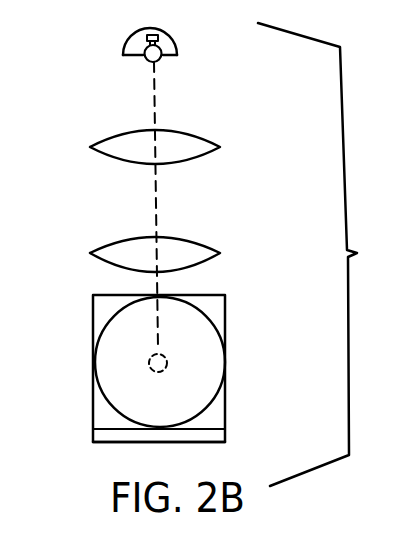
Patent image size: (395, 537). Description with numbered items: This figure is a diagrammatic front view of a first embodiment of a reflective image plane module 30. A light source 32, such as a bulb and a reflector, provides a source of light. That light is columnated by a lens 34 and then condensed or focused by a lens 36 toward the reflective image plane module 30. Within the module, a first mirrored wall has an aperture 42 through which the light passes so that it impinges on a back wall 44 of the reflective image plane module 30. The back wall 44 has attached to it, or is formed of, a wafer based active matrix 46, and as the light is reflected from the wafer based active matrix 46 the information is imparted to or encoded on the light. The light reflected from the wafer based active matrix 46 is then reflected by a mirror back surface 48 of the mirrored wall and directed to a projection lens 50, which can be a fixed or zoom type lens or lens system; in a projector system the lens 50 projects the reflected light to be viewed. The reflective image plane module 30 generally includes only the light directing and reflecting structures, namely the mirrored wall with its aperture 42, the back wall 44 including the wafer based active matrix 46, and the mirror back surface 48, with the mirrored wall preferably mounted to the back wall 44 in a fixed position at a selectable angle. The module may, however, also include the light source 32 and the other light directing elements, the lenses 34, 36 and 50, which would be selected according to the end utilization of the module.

The reflective image plane module 30 is at (262, 417).
The light source 32 is at (179, 49).
The lens 34 is at (214, 143).
The lens 36 is at (214, 249).
The aperture 42 is at (148, 371).
The back wall 44 is at (93, 440).
The wafer based active matrix 46 is at (102, 429).
The mirror back surface 48 is at (93, 317).
The projection lens 50 is at (224, 362).